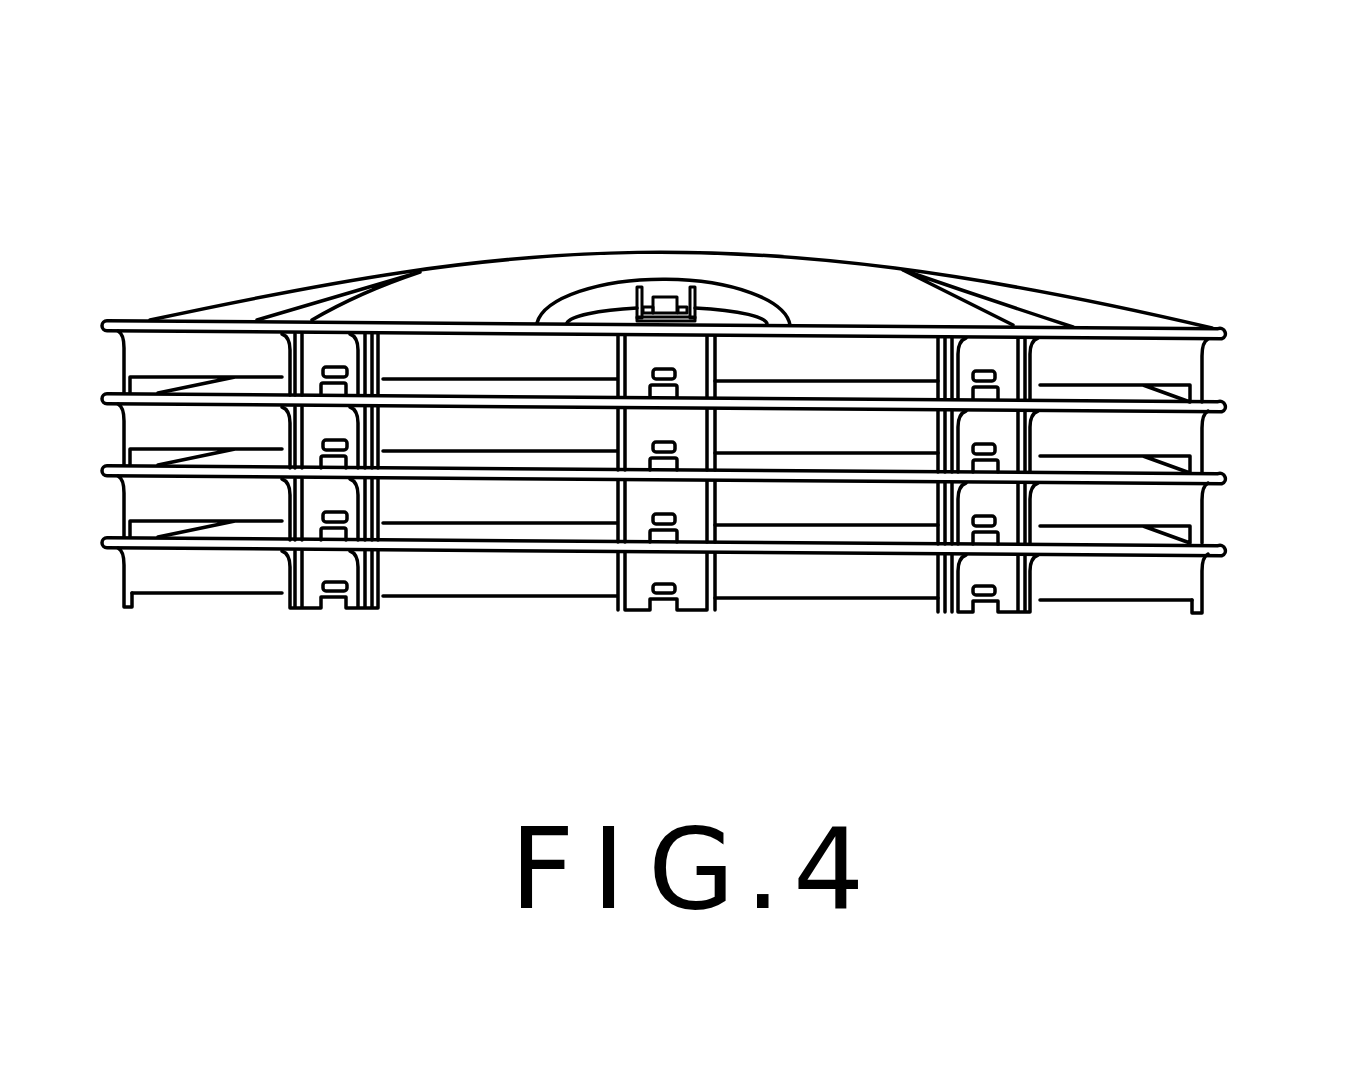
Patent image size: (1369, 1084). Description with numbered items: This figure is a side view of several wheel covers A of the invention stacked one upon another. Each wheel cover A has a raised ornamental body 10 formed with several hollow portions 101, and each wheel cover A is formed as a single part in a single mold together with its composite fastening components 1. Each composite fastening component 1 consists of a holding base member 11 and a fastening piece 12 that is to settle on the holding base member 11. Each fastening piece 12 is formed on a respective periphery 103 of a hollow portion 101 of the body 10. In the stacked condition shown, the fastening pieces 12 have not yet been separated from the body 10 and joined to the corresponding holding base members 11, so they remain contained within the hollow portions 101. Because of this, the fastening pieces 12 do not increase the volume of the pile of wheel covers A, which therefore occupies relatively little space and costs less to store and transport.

The wheel cover A is at (1110, 283).
The raised ornamental body 10 is at (878, 310).
The hollow portions 101 is at (305, 315).
The peripheries 103 is at (245, 313).
The composite fastening components 1 is at (663, 283).
The fastening piece 12 is at (718, 293).
The holding base member 11 is at (685, 352).